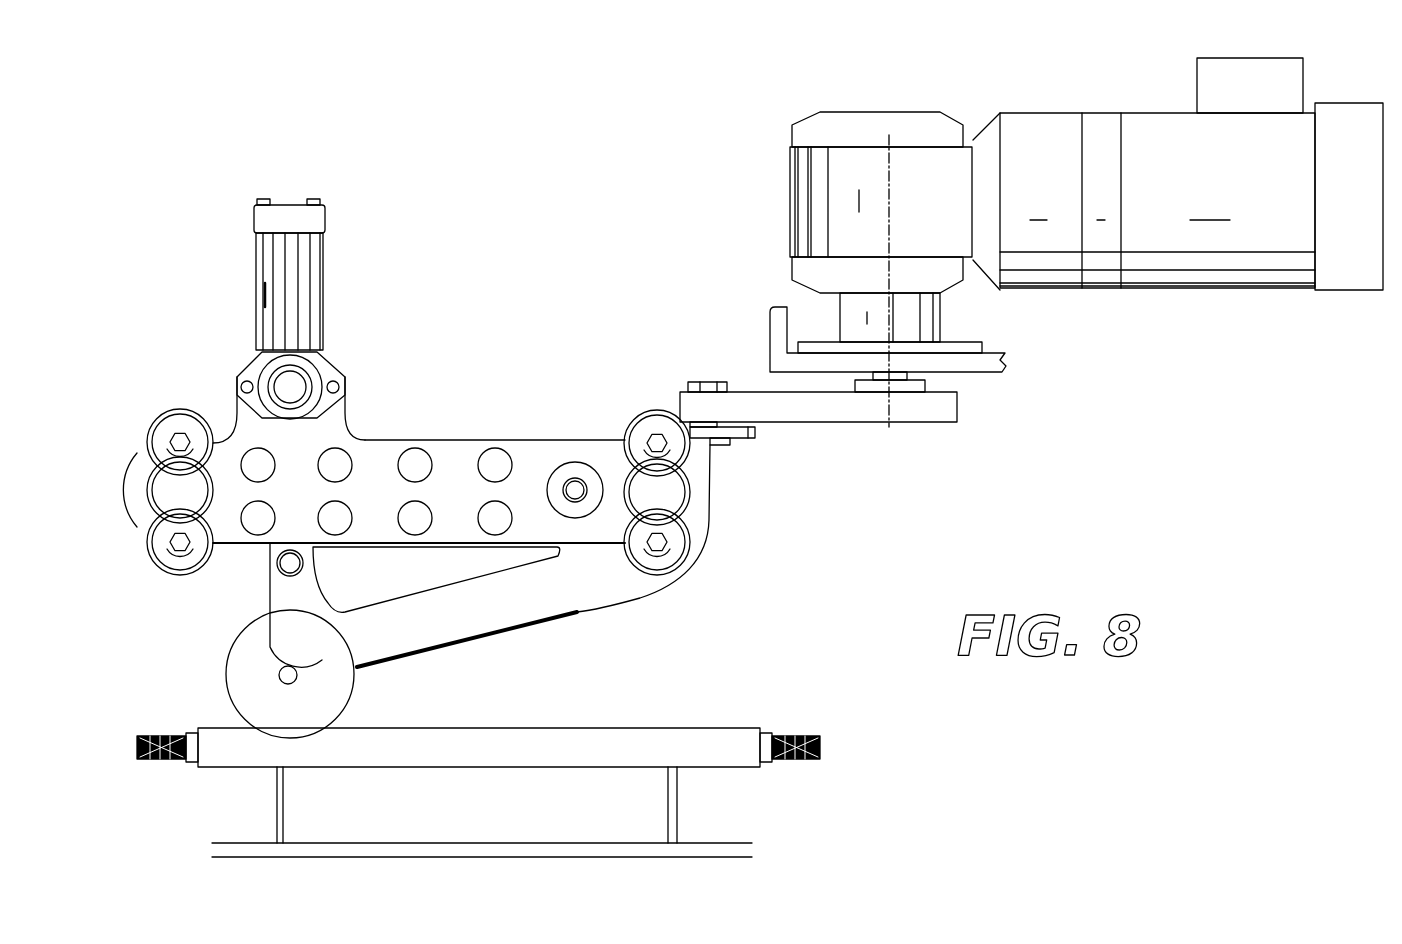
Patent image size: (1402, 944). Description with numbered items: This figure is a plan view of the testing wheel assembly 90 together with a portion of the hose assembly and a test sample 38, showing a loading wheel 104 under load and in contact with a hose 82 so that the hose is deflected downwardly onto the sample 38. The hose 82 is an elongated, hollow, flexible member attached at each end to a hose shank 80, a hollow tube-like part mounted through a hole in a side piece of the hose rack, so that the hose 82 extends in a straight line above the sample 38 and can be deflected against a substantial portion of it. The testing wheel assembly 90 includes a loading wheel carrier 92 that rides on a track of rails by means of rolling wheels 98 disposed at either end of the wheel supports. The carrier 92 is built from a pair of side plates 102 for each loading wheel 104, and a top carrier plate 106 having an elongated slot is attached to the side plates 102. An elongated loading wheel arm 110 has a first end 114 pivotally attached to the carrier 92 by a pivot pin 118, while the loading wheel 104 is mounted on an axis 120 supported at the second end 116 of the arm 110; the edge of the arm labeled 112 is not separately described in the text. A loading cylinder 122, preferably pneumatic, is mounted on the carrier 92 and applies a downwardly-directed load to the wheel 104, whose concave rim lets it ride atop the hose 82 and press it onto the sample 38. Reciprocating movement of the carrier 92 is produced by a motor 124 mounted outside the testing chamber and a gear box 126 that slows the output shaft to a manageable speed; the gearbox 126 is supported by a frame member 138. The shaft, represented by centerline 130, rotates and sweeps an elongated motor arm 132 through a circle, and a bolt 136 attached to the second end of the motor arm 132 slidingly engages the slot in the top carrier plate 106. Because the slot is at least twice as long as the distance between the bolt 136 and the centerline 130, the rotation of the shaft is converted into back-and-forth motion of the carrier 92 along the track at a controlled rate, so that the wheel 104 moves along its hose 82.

The test sample 38 is at (458, 823).
The hose shank 80 is at (779, 723).
The hose 82 is at (707, 727).
The testing wheel assembly 90 is at (170, 265).
The loading wheel carrier 92 is at (361, 424).
The rolling wheels 98 is at (168, 412).
The side plates 102 is at (452, 473).
The loading wheel 104 is at (358, 700).
The top carrier plate 106 is at (752, 433).
The loading wheel arm 110 is at (444, 585).
The edge 112 is at (455, 637).
The first end 114 is at (657, 535).
The second end 116 is at (267, 648).
The pivot pin 118 is at (577, 476).
The axis 120 is at (283, 677).
The loading cylinder 122 is at (325, 283).
The motor 124 is at (1035, 112).
The gear box 126 is at (868, 112).
The centerline 130 is at (892, 318).
The motor arm 132 is at (802, 420).
The bolt 136 is at (705, 380).
The frame member 138 is at (770, 322).